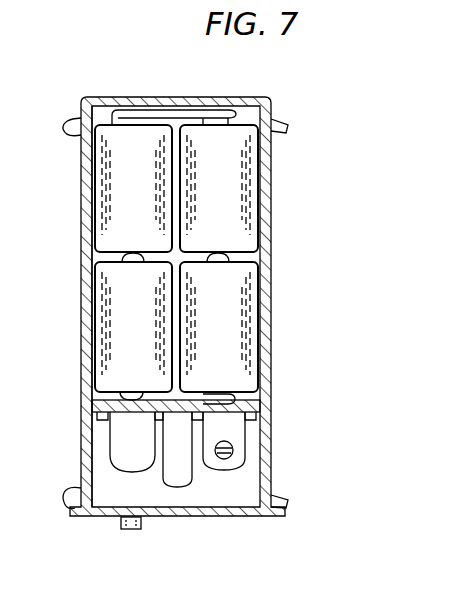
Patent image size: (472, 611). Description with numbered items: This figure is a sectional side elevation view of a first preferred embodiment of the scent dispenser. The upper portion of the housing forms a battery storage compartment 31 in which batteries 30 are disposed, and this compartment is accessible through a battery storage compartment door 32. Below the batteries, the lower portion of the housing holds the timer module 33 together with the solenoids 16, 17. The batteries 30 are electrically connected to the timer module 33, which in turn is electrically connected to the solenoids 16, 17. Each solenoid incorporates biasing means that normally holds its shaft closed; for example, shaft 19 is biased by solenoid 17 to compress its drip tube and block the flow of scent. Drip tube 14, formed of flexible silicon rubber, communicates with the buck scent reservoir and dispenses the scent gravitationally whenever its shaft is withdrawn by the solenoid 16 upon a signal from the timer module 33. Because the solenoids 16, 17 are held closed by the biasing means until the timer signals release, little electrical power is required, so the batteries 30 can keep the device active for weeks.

The drip tube 14 is at (124, 529).
The solenoid 16 is at (110, 438).
The solenoid 17 is at (240, 440).
The shaft 19 is at (226, 466).
The batteries 30 is at (100, 275).
The battery storage compartment 31 is at (93, 199).
The battery storage compartment door 32 is at (160, 97).
The timer module 33 is at (180, 483).